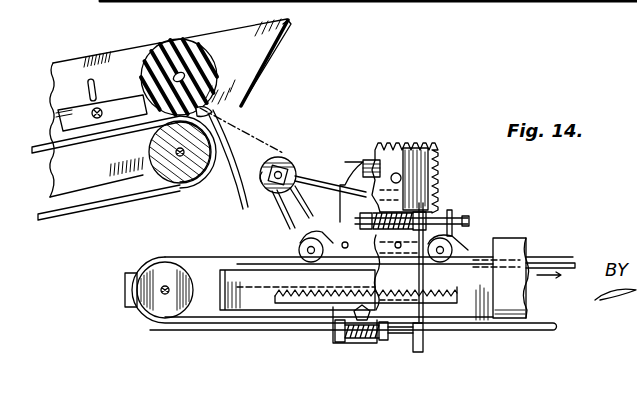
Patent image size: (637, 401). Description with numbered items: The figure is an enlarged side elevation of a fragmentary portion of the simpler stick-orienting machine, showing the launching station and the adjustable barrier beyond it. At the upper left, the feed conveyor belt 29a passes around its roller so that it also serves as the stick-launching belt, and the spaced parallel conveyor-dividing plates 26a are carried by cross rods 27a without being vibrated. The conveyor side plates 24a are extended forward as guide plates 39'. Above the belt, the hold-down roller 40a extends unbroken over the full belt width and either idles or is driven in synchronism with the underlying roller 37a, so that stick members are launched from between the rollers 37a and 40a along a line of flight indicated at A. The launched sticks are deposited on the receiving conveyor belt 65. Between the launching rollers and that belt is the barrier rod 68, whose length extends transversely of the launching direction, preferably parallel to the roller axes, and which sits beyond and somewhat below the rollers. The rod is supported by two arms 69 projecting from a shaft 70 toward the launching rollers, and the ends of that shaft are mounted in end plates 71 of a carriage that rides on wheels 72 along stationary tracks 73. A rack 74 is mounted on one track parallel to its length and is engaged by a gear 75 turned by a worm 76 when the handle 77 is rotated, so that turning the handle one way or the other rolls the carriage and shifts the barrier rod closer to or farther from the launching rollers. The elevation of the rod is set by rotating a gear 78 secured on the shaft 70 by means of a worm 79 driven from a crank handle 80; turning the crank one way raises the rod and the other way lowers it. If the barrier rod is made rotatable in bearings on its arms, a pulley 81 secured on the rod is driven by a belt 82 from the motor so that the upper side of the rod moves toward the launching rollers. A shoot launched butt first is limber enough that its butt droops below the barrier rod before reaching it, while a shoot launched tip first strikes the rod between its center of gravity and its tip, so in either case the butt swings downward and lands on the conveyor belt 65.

The conveyor side plate 24a is at (115, 63).
The cross rod 27a is at (90, 108).
The guide plate 39' is at (295, 36).
The hold-down roller 40a is at (167, 43).
The conveyor-dividing plate 26a is at (53, 145).
The feed conveyor belt 29a is at (83, 203).
The roller 37a is at (167, 187).
The line of action A is at (227, 143).
The belt 82 is at (257, 220).
The barrier rod 68 is at (297, 157).
The pulley 81 is at (280, 158).
The end plate 71 is at (341, 190).
The arm 69 is at (355, 168).
The shaft 70 is at (405, 140).
The gear 78 is at (432, 160).
The worm 79 is at (443, 200).
The crank handle 80 is at (450, 223).
The wheel 72 is at (297, 243).
The conveyor belt 65 is at (160, 257).
The track 73 is at (220, 324).
The rack 74 is at (283, 298).
The gear 75 is at (340, 340).
The worm 76 is at (377, 338).
The handle 77 is at (440, 348).